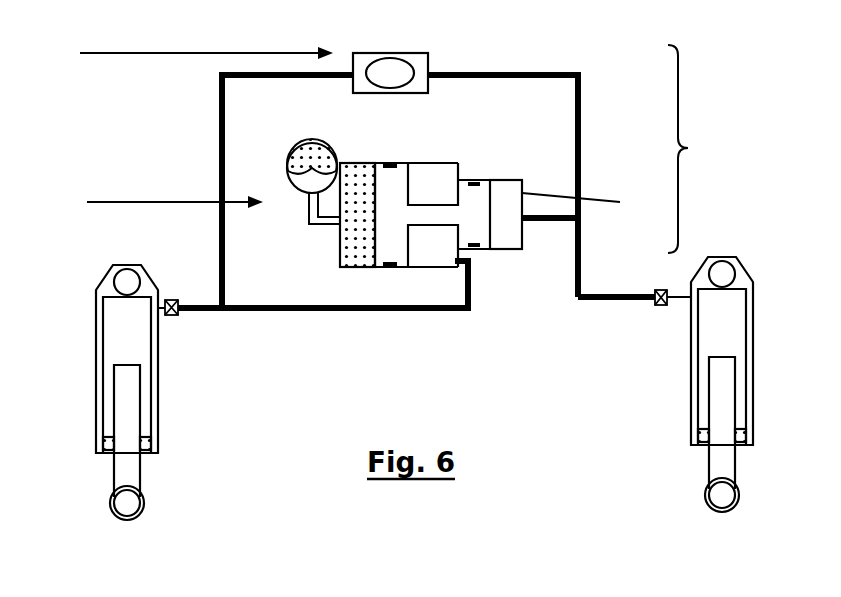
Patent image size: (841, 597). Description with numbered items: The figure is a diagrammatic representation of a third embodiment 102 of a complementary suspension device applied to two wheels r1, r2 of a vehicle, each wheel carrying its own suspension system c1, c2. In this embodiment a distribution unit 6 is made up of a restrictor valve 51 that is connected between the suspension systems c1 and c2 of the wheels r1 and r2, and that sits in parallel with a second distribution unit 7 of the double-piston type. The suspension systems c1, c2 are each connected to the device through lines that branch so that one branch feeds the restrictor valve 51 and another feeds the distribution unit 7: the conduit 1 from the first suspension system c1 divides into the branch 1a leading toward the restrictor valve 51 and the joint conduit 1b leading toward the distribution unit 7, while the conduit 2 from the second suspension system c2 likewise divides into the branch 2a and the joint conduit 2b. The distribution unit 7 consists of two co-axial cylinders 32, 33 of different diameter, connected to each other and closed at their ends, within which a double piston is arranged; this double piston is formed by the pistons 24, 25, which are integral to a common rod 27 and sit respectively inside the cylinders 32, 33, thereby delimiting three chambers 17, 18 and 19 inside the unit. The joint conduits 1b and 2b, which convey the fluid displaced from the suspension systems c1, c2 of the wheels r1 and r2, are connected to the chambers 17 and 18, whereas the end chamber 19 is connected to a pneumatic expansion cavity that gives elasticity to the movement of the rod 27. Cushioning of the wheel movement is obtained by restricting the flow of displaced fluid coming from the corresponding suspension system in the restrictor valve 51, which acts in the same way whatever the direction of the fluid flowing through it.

The distribution unit 6 is at (187, 50).
The distribution unit 7 is at (152, 197).
The restrictor valve 51 is at (428, 53).
The first line branch 1a is at (220, 152).
The first hydraulic line 1 is at (193, 312).
The joint conduit 1b is at (320, 312).
The second line branch 2a is at (578, 148).
The second hydraulic line 2 is at (620, 300).
The joint conduit 2b is at (543, 218).
The cylinder 32 is at (292, 153).
The end chamber 19 is at (338, 246).
The piston 25 is at (385, 195).
The chamber 18 is at (415, 242).
The common rod 27 is at (427, 212).
The piston 24 is at (475, 200).
The chamber 17 is at (502, 228).
The cylinder 33 is at (592, 210).
The third embodiment 102 is at (714, 149).
The suspension system c1 is at (96, 375).
The suspension system c2 is at (755, 365).
The wheel r1 is at (123, 558).
The wheel r2 is at (730, 557).